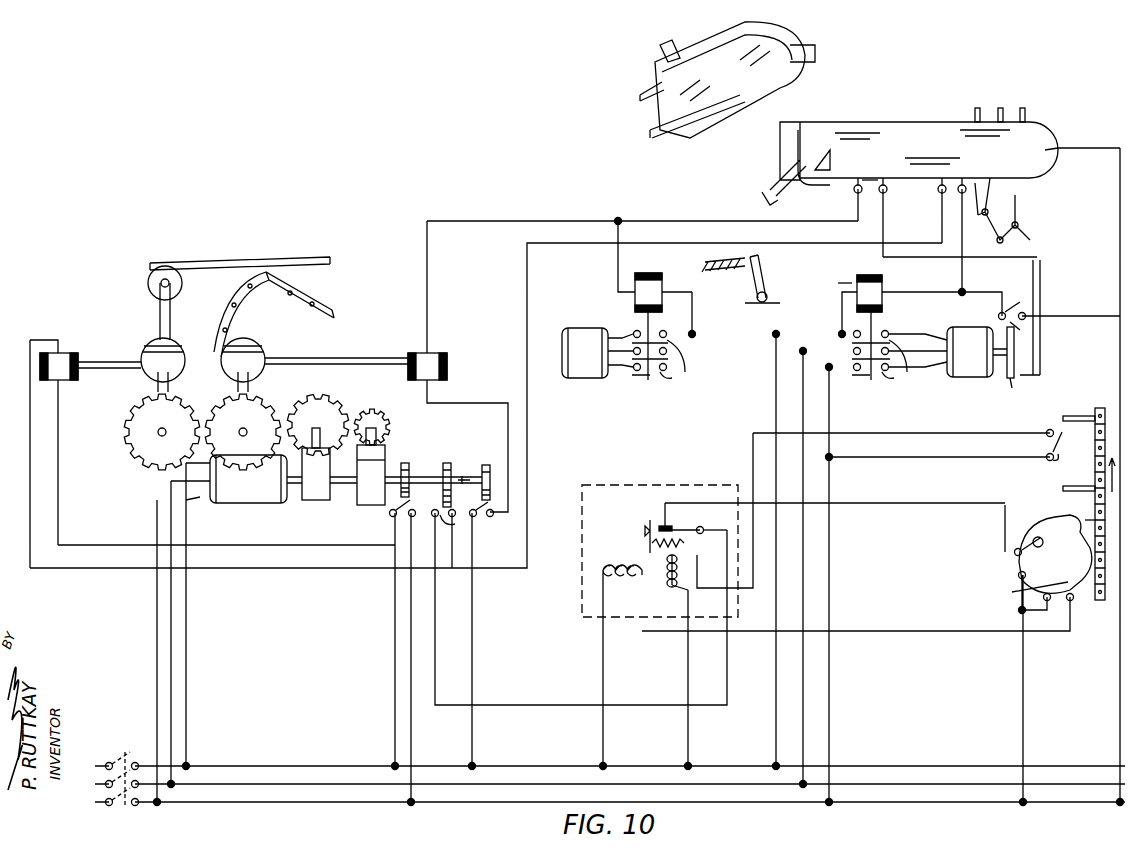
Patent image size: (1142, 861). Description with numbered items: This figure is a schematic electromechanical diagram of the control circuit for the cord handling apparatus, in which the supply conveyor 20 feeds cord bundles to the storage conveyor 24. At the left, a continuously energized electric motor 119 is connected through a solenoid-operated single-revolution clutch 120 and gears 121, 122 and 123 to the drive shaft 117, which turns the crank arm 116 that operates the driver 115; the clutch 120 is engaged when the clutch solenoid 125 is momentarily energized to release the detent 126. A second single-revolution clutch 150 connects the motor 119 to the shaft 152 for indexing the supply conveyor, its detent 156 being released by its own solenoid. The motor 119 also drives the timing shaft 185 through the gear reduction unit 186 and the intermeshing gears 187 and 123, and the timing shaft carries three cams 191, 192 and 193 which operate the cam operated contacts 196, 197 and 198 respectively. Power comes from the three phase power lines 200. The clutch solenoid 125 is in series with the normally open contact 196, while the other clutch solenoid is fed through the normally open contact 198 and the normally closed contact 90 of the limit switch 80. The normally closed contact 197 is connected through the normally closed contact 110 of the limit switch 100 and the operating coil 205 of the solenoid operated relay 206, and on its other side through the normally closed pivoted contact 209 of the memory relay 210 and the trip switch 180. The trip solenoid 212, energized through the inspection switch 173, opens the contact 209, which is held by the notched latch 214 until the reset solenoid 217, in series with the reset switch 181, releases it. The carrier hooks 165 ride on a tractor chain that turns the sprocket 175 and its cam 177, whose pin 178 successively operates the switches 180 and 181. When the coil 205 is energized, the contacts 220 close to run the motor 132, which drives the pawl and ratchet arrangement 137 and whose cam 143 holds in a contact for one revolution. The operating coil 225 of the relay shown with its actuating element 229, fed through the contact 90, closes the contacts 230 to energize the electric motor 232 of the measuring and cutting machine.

The supply conveyor 20 is at (815, 54).
The storage conveyor 24 is at (943, 109).
The limit switch 80 is at (868, 200).
The contact 90 is at (876, 183).
The limit switch 100 is at (952, 199).
The contact 110 is at (958, 184).
The driver 115 is at (270, 260).
The crank arm 116 is at (158, 270).
The drive shaft 117 is at (160, 306).
The electric motor 119 is at (235, 504).
The single-revolution clutch 120 is at (146, 352).
The gear 121 is at (138, 452).
The gear 122 is at (222, 400).
The gear 123 is at (340, 400).
The clutch solenoid 125 is at (64, 353).
The detent 126 is at (122, 370).
The electric motor 132 is at (970, 377).
The pawl and ratchet arrangement 137 is at (1002, 314).
The cam 143 is at (1010, 384).
The single-revolution clutch 150 is at (264, 372).
The shaft 152 is at (240, 336).
The detent 156 is at (350, 358).
The carrier hook 165 is at (1088, 402).
The inspection switch 173 is at (1062, 456).
The sprocket 175 is at (1095, 510).
The cam 177 is at (1055, 517).
The pin 178 is at (1038, 537).
The trip switch 180 is at (1034, 556).
The reset switch 181 is at (1016, 591).
The timing shaft 185 is at (470, 484).
The gear reduction unit 186 is at (364, 503).
The gear 187 is at (392, 428).
The cam 191 is at (408, 463).
The cam 192 is at (450, 463).
The cam 193 is at (500, 452).
The cam operated contact 196 is at (395, 530).
The cam operated contact 197 is at (456, 524).
The cam operated contact 198 is at (495, 506).
The power lines 200 is at (300, 802).
The operating coil 205 is at (882, 284).
The solenoid operated relay 206 is at (845, 279).
The pivoted contact 209 is at (682, 528).
The memory relay 210 is at (680, 482).
The trip solenoid 212 is at (674, 586).
The latch 214 is at (645, 530).
The reset solenoid 217 is at (625, 562).
The contacts 220 is at (888, 380).
The operating coil 225 is at (664, 284).
The relay 229 is at (676, 266).
The contacts 230 is at (664, 380).
The electric motor 232 is at (584, 378).